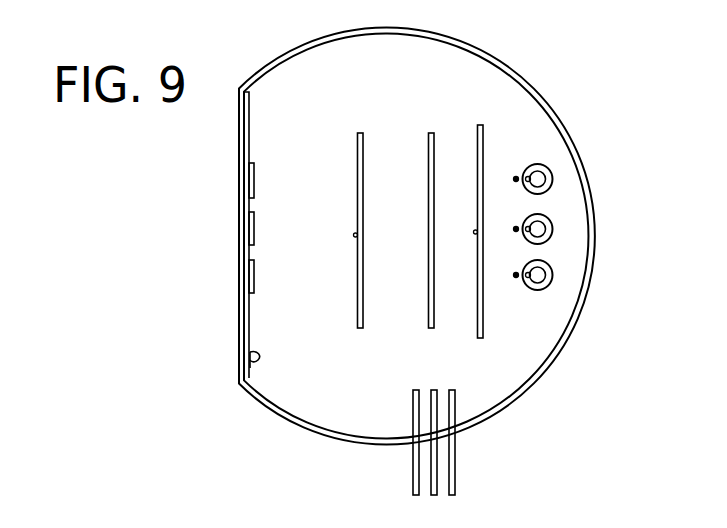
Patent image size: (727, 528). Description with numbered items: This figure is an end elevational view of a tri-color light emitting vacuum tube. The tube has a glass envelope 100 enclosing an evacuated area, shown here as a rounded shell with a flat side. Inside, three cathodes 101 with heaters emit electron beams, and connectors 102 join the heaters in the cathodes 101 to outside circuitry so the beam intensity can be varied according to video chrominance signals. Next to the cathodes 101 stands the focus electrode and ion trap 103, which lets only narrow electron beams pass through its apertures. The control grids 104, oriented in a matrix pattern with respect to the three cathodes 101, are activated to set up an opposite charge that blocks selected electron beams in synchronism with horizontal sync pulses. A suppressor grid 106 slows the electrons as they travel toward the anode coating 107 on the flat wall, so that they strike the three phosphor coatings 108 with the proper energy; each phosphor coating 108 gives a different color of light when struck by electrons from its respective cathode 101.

The glass envelope 100 is at (548, 98).
The cathodes 101 is at (550, 183).
The connectors 102 is at (532, 278).
The focus electrode and ion trap 103 is at (488, 338).
The control grids 104 is at (428, 324).
The suppressor grid 106 is at (356, 324).
The anode coating 107 is at (250, 356).
The phosphor coatings 108 is at (250, 190).